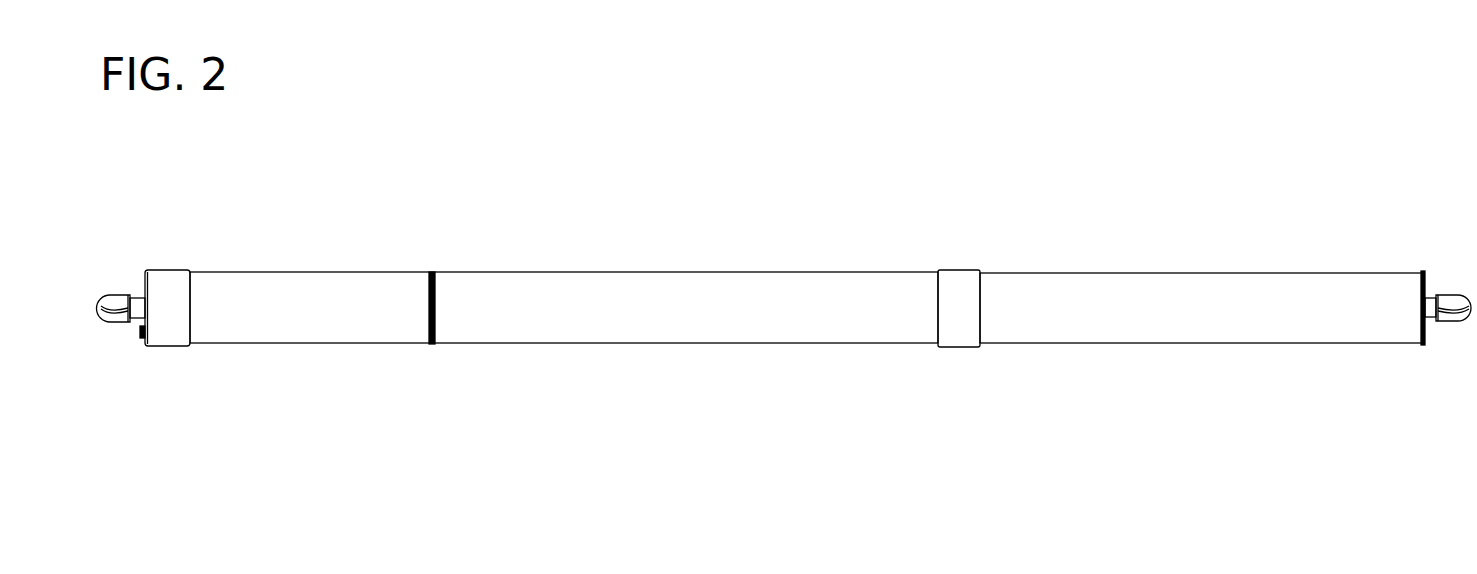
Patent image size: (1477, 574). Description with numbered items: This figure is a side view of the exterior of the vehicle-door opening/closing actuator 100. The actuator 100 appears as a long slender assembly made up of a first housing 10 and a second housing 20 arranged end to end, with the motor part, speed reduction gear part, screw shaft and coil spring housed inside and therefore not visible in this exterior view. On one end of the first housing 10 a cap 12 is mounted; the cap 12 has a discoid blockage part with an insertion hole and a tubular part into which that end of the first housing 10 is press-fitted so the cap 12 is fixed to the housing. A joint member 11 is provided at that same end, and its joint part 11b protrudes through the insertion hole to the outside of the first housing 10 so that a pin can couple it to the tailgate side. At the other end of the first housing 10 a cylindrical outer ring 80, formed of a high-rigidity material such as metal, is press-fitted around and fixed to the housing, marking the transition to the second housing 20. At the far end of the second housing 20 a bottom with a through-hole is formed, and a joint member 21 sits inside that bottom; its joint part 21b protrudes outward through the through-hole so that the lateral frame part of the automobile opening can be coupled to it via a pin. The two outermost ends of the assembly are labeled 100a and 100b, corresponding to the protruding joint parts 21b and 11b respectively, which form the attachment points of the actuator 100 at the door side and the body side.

The actuator 100 is at (892, 205).
The first housing 10 is at (589, 272).
The second housing 20 is at (1197, 273).
The outer ring 80 is at (957, 270).
The cap 12 is at (170, 346).
The joint member 11 is at (109, 295).
The joint part 11b is at (113, 308).
The joint member 21 is at (1451, 295).
The joint part 21b is at (1453, 308).
The first end of assembly 100a is at (1448, 322).
The second end of assembly 100b is at (113, 323).